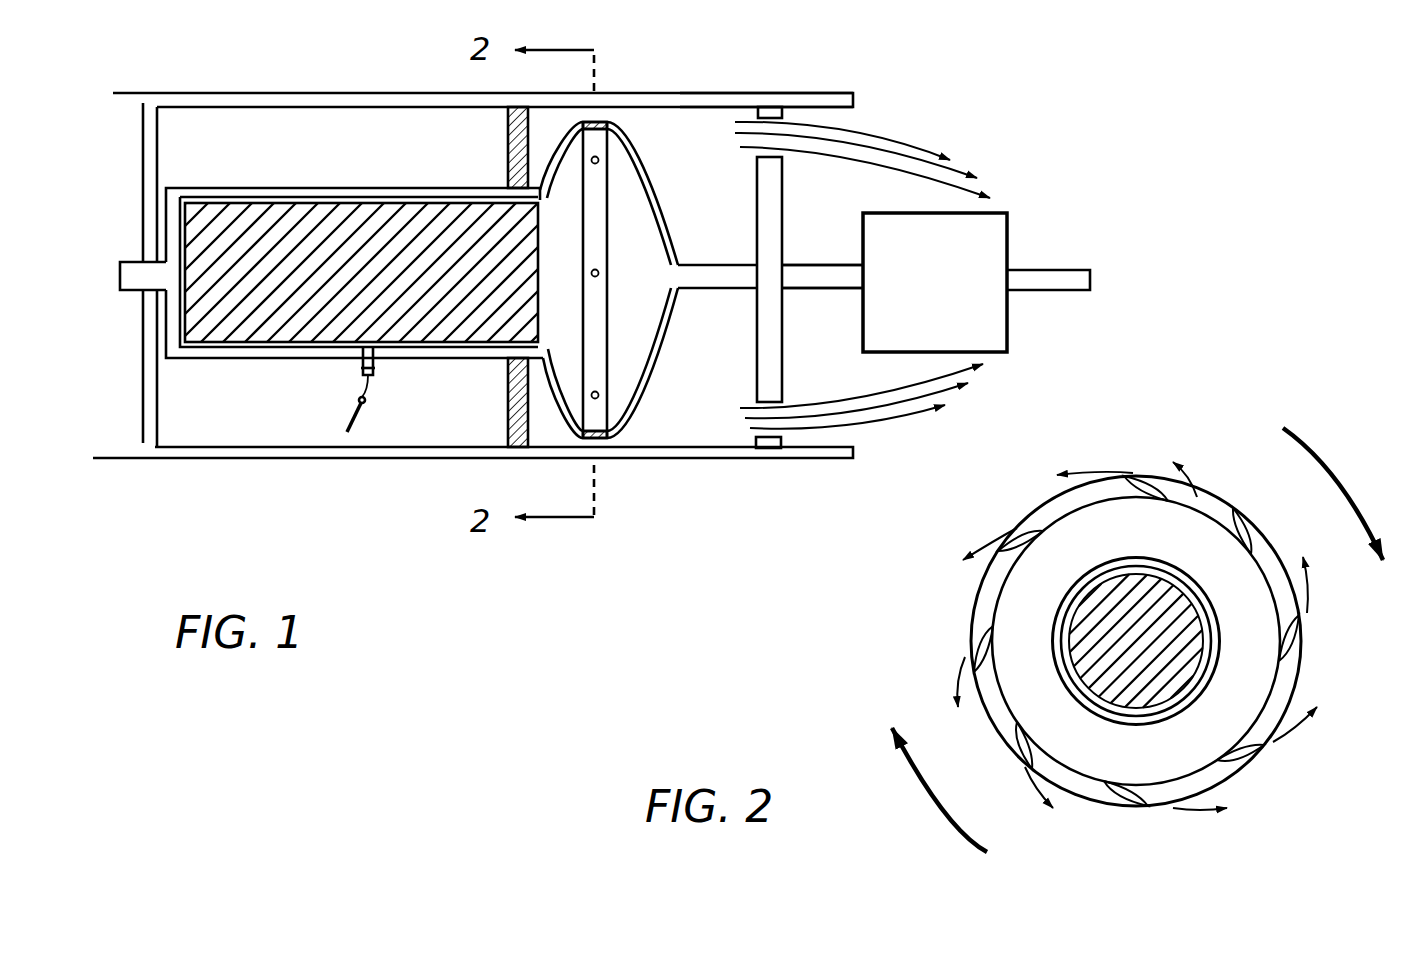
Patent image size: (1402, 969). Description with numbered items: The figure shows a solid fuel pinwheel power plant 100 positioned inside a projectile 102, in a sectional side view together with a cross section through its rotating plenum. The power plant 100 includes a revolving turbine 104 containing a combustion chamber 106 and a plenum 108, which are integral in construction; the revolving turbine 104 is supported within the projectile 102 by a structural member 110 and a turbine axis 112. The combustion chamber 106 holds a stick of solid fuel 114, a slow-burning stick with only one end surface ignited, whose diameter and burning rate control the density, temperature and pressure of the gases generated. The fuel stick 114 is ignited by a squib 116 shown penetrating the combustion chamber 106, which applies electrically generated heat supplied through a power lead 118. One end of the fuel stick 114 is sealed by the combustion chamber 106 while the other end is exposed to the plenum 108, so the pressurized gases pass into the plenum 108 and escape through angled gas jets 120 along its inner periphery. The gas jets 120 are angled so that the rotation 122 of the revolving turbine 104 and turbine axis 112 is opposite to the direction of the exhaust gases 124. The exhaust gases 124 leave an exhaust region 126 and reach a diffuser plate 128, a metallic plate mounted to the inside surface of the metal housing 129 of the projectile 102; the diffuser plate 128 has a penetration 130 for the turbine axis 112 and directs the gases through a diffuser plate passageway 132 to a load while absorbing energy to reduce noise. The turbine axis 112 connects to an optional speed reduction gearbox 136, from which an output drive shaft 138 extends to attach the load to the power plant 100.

In FIG. 1, the solid fuel pinwheel power plant 100 is at (333, 75).
In FIG. 1, the projectile 102 is at (190, 88).
In FIG. 1, the revolving turbine 104 is at (497, 175).
In FIG. 1, the combustion chamber 106 is at (287, 188).
In FIG. 2, the combustion chamber 106 is at (1053, 625).
In FIG. 1, the plenum 108 is at (655, 200).
In FIG. 2, the plenum 108 is at (975, 635).
In FIG. 1, the structural member 110 is at (508, 405).
In FIG. 1, the turbine axis 112 is at (128, 262).
In FIG. 1, the solid fuel stick 114 is at (248, 298).
In FIG. 2, the solid fuel stick 114 is at (1155, 680).
In FIG. 1, the squib 116 is at (380, 366).
In FIG. 1, the power lead 118 is at (353, 400).
In FIG. 1, the gas jets 120 is at (597, 160).
In FIG. 2, the gas jets 120 is at (1137, 475).
In FIG. 2, the rotation 122 is at (1333, 472).
In FIG. 1, the exhaust gases 124 is at (882, 142).
In FIG. 2, the exhaust gases 124 is at (1197, 462).
In FIG. 1, the exhaust region 126 is at (712, 120).
In FIG. 1, the diffuser plate 128 is at (783, 182).
In FIG. 1, the metal housing 129 is at (275, 458).
In FIG. 1, the penetration 130 is at (790, 265).
In FIG. 1, the diffuser plate passageway 132 is at (770, 125).
In FIG. 1, the speed reduction gearbox 136 is at (1007, 240).
In FIG. 1, the output drive shaft 138 is at (1042, 290).